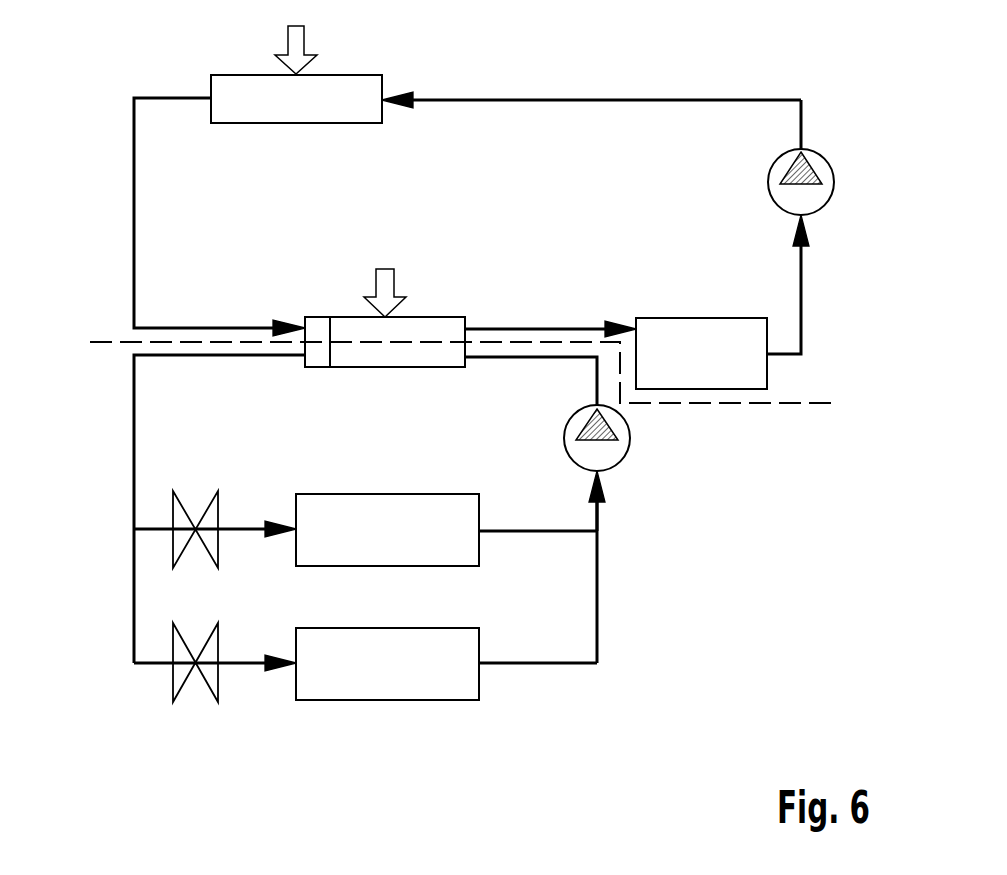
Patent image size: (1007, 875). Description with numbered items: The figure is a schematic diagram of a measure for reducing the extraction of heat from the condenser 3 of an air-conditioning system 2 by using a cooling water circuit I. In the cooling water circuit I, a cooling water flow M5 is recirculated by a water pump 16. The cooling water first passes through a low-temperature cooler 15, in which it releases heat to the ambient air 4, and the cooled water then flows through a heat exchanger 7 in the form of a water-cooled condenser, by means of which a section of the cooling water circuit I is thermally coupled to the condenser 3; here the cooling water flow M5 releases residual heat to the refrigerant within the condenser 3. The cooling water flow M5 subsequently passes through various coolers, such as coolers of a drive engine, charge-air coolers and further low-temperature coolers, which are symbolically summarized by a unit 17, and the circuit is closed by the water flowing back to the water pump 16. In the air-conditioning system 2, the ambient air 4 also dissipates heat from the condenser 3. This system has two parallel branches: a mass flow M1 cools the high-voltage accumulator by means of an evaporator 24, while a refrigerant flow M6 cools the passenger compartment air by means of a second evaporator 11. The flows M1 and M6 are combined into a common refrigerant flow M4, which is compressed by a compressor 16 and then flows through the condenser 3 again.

The air-conditioning system 2 is at (122, 706).
The cooling water circuit I is at (134, 150).
The low-temperature cooler 15 is at (283, 123).
The ambient air 4 is at (304, 34).
The cooling water flow M5 is at (608, 100).
The water pump / compressor 16 is at (820, 152).
The condenser 3 is at (422, 367).
The heat exchanger 7 is at (321, 317).
The unit 17 is at (662, 318).
The second evaporator 11 is at (296, 506).
The refrigerant flow M6 is at (515, 531).
The common refrigerant flow M4 is at (598, 515).
The evaporator 24 is at (428, 700).
The mass flow M1 is at (517, 663).